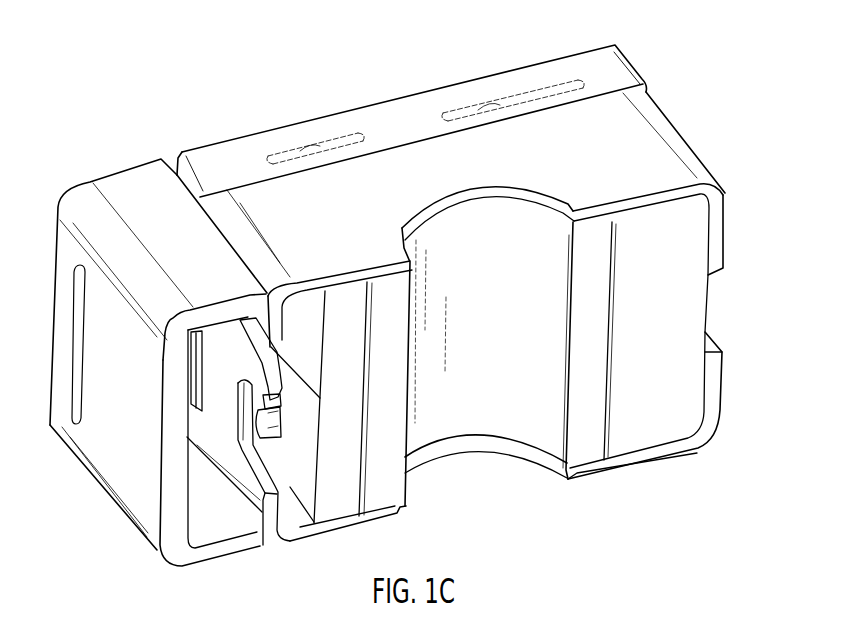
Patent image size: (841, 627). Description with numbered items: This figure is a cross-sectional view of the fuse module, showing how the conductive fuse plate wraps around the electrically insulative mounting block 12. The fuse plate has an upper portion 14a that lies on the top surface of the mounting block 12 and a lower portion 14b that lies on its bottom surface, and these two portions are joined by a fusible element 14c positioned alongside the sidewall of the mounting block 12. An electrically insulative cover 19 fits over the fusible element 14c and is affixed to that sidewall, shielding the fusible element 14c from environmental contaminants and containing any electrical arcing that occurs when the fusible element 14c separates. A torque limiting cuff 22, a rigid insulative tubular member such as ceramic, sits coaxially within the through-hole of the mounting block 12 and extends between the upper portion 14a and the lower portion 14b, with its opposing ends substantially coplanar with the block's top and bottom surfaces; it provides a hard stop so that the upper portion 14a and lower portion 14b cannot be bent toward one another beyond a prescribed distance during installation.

The mounting block 12 is at (370, 105).
The upper portion 14a is at (280, 208).
The lower portion 14b is at (608, 462).
The fusible element 14c is at (220, 415).
The cover 19 is at (100, 360).
The torque limiting cuff 22 is at (488, 420).